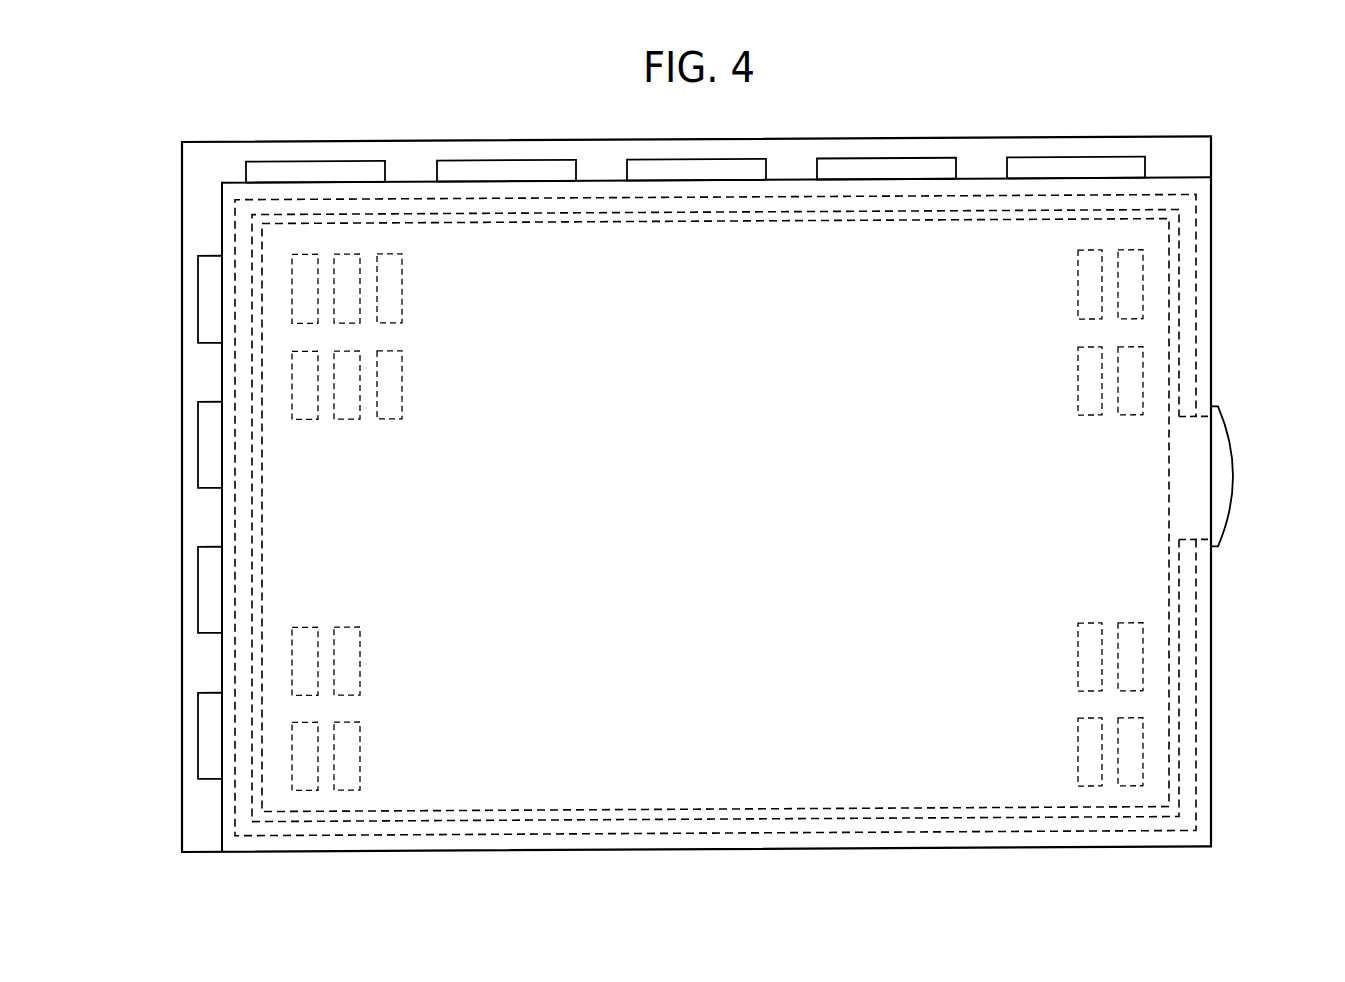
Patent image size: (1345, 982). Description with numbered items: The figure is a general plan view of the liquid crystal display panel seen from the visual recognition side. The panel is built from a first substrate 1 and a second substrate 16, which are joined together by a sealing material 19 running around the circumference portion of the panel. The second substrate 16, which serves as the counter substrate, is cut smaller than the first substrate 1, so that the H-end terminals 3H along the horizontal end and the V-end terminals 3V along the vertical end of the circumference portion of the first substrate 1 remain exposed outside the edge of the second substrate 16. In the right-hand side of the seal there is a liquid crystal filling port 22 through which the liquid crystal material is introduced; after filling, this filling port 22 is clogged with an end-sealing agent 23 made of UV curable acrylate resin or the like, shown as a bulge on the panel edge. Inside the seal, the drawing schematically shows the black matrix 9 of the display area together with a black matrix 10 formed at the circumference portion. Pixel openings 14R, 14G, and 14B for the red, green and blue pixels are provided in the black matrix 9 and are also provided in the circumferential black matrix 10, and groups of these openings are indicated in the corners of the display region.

The first substrate 1 is at (1195, 167).
The H-end terminals 3H is at (258, 172).
The V-end terminals 3V is at (210, 741).
The second substrate 16 is at (222, 219).
The sealing material 19 is at (243, 805).
The black matrix 9 is at (715, 563).
The black matrix 10 is at (718, 790).
The pixel opening 14B is at (298, 267).
The pixel opening 14R is at (345, 285).
The pixel opening 14G is at (395, 311).
The liquid crystal filling port 22 is at (1179, 422).
The end-sealing agent 23 is at (1220, 521).